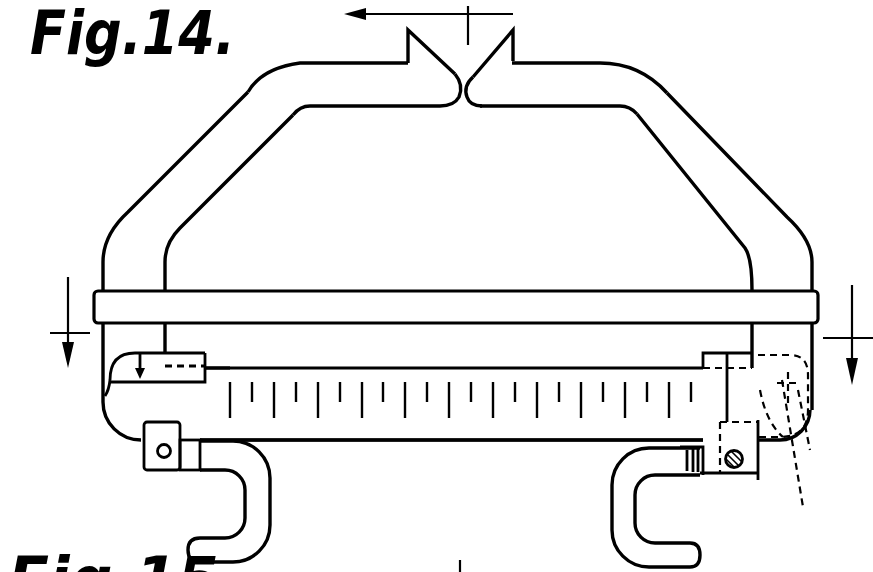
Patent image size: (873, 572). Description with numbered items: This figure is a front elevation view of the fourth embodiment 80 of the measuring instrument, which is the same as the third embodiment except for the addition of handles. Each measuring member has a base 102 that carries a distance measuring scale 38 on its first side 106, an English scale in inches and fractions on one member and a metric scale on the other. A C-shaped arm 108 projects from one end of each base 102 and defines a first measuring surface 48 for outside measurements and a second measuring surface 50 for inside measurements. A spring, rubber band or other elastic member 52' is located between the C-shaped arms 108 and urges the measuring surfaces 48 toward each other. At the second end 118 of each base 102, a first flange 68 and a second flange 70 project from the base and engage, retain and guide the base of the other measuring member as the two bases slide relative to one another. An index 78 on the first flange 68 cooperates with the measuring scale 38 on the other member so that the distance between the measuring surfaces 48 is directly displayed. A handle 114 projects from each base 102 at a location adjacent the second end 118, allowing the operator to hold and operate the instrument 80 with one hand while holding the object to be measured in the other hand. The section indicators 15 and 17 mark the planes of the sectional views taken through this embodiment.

The embodiment 80 is at (462, 235).
The C-shaped arms 108 is at (205, 188).
The second measuring surface 50 is at (408, 43).
The first measuring surface 48 is at (440, 130).
The elastic member 52' is at (456, 288).
The first flange 68 is at (205, 353).
The index 78 is at (106, 393).
The first side 106 is at (332, 431).
The base 102 is at (432, 431).
The measuring scale 38 is at (490, 407).
The second flange 70 is at (145, 466).
The handle 114 is at (262, 519).
The second end 118 is at (819, 453).
The section line 15- 15 is at (453, 351).
The section line 17- 17 is at (401, 286).